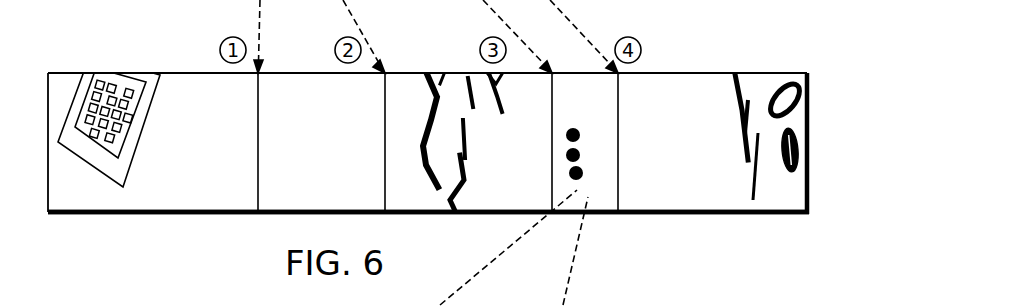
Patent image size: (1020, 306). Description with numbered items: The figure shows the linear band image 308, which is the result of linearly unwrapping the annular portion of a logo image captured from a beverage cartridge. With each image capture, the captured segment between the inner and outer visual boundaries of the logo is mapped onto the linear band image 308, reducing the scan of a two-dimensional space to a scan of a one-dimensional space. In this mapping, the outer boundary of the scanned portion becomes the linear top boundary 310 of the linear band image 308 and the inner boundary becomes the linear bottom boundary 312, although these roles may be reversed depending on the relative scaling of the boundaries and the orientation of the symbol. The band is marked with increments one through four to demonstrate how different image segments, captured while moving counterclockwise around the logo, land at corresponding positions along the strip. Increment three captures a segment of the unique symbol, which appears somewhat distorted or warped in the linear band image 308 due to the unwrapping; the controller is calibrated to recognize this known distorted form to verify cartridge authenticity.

The linear band image 308 is at (809, 105).
The linear top boundary 310 is at (167, 73).
The linear bottom boundary 312 is at (155, 212).